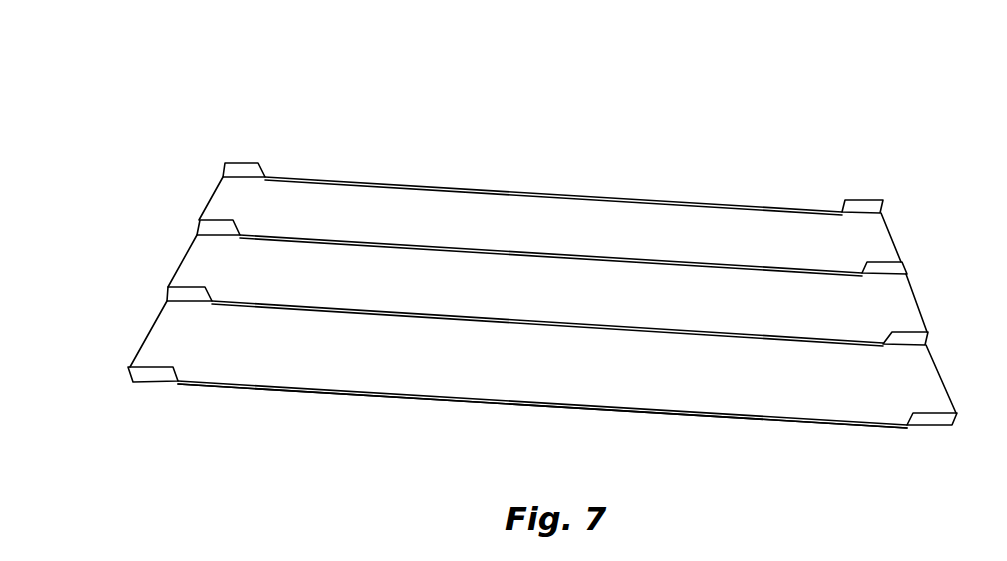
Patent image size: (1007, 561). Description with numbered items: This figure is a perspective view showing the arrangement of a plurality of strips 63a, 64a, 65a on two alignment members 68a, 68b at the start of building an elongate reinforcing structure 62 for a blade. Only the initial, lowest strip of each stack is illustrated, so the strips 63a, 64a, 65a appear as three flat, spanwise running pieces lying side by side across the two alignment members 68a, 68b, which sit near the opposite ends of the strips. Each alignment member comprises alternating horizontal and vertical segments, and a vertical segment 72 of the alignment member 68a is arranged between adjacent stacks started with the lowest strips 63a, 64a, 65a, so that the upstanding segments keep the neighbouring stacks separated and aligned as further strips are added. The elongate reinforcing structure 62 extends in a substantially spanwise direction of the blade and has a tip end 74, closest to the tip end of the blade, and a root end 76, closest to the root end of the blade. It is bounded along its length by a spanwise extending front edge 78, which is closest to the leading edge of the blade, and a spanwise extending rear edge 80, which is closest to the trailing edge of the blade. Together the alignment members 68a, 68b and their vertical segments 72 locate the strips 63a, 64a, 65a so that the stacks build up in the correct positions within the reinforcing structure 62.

The elongate reinforcing structure 62 is at (147, 89).
The strip 63a is at (280, 365).
The strip 64a is at (342, 273).
The strip 65a is at (428, 213).
The alignment member 68a is at (130, 370).
The alignment member 68b is at (940, 416).
The vertical segment 72 is at (168, 287).
The tip end 74 is at (900, 238).
The root end 76 is at (158, 320).
The front edge 78 is at (413, 398).
The rear edge 80 is at (578, 196).